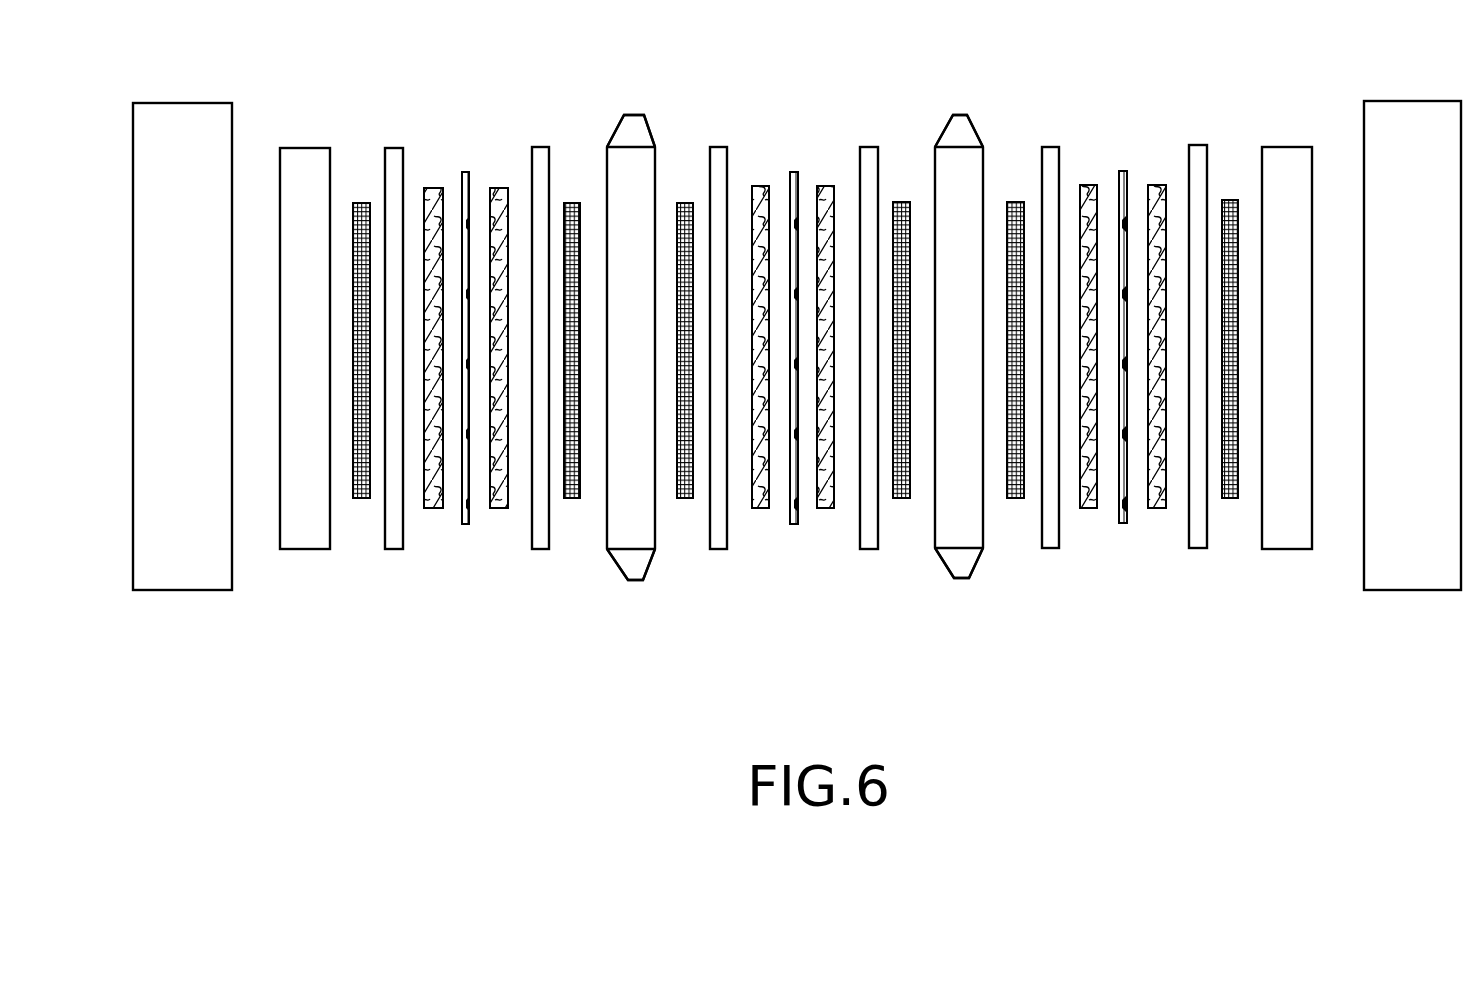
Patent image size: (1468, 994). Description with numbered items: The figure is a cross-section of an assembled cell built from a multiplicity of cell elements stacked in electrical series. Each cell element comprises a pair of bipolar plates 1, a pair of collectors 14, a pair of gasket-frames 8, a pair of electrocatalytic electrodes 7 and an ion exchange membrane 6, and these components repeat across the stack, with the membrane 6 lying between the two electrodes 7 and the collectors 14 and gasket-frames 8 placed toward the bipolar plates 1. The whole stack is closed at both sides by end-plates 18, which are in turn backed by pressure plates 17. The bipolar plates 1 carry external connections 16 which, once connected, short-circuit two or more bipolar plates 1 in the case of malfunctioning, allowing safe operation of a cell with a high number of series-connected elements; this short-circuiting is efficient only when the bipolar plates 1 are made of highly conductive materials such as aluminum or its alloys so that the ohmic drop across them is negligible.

The bipolar plate 1 is at (635, 528).
The ion exchange membrane 6 is at (468, 524).
The electrocatalytic electrode 7 is at (432, 188).
The gasket-frame 8 is at (393, 148).
The collector 14 is at (362, 498).
The external connection 16 is at (630, 128).
The pressure plate 17 is at (181, 568).
The end-plate 18 is at (305, 532).